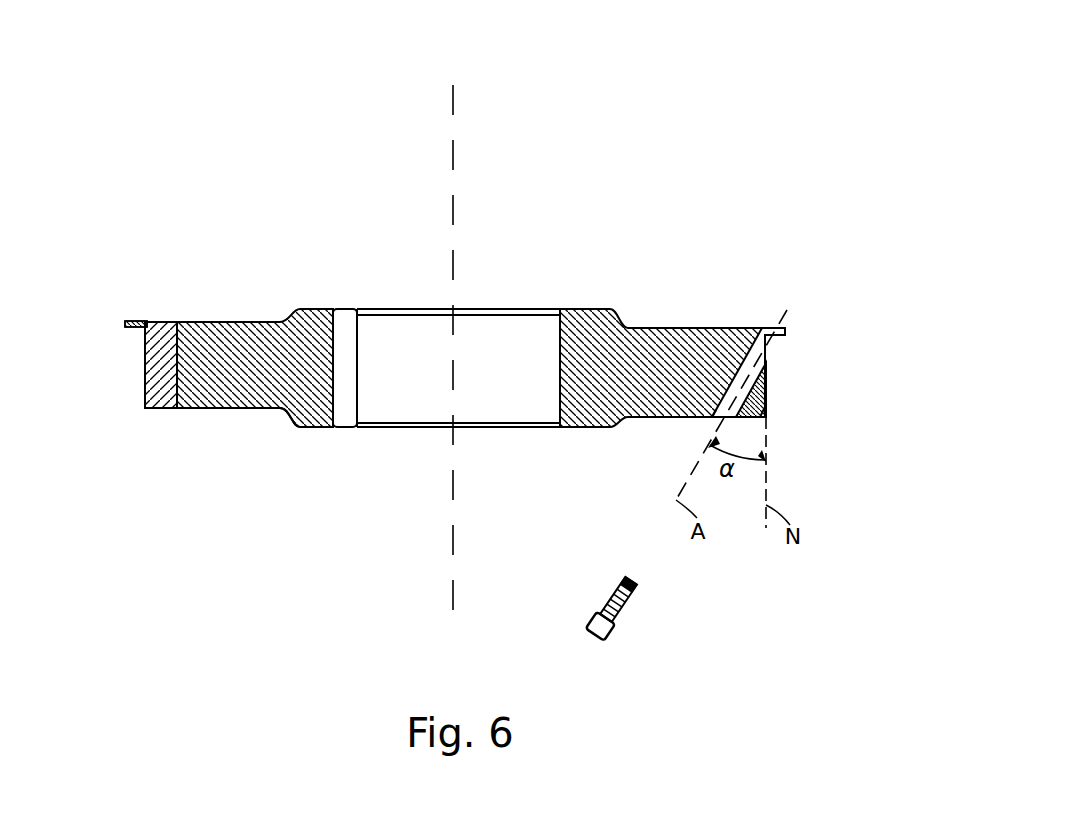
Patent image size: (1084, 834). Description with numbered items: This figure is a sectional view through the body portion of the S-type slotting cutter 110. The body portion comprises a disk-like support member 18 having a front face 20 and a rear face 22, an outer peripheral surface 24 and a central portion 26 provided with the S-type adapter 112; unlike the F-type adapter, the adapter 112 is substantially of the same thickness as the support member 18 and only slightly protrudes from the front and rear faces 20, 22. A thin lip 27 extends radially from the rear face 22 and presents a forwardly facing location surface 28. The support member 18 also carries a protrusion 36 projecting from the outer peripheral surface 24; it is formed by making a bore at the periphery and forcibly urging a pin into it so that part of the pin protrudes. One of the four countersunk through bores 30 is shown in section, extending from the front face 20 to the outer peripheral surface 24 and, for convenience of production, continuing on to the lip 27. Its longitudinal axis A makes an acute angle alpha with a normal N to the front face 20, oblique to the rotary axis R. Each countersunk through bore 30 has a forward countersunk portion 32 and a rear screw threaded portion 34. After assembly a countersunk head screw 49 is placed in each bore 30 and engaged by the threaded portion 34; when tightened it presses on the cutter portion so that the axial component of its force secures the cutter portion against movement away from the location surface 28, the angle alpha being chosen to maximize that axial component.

The slotting cutter 110 is at (705, 118).
The central portion 26 is at (512, 228).
The support member 18 is at (150, 470).
The rear face 22 is at (225, 322).
The front face 20 is at (230, 410).
The lip 27 is at (125, 323).
The location surface 28 is at (135, 329).
The protrusion 36 is at (145, 372).
The S-type adapter 112 is at (393, 307).
The rear screw threaded portion 34 is at (757, 362).
The outer peripheral surface 24 is at (767, 385).
The forward countersunk portion 32 is at (768, 407).
The countersunk through bore 30 is at (706, 424).
The countersunk head screw 49 is at (632, 610).